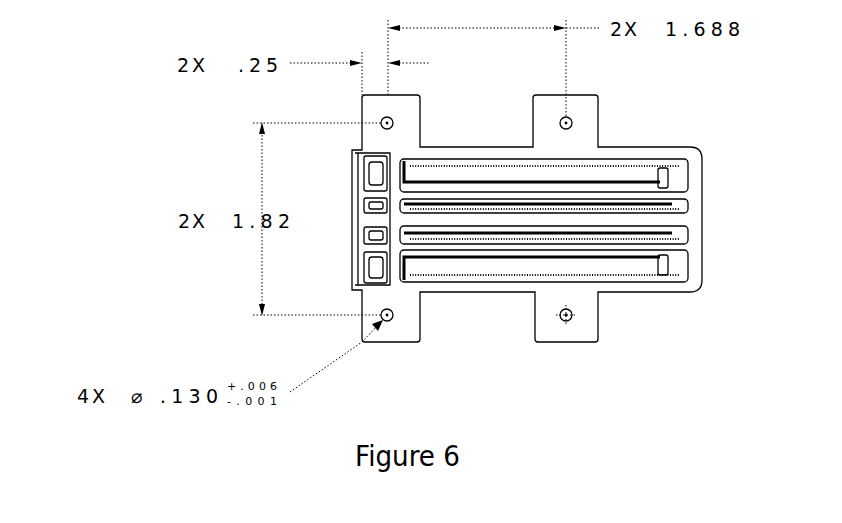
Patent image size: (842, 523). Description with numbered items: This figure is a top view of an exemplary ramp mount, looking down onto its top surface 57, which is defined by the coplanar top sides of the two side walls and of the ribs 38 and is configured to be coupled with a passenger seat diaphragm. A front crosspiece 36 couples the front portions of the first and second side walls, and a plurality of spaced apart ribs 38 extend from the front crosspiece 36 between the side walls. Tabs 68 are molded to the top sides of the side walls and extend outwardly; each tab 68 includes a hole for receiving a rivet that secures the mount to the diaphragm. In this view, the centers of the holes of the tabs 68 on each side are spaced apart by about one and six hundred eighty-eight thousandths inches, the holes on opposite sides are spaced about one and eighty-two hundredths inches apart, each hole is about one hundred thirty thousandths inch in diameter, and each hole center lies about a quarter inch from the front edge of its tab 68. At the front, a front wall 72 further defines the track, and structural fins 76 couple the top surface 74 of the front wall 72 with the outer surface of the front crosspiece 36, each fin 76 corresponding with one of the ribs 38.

The top surface 57 is at (480, 358).
The tabs 68 is at (363, 108).
The ribs 38 is at (473, 214).
The front crosspiece 36 is at (382, 177).
The front wall 72 is at (356, 203).
The structural fins 76 is at (370, 222).
The top surface of the front wall 74 is at (371, 265).